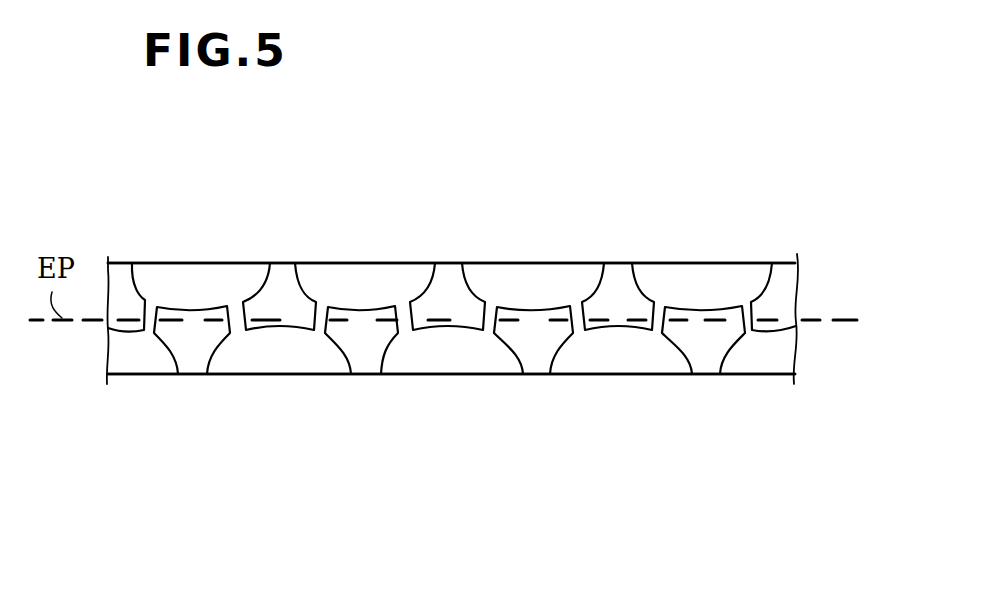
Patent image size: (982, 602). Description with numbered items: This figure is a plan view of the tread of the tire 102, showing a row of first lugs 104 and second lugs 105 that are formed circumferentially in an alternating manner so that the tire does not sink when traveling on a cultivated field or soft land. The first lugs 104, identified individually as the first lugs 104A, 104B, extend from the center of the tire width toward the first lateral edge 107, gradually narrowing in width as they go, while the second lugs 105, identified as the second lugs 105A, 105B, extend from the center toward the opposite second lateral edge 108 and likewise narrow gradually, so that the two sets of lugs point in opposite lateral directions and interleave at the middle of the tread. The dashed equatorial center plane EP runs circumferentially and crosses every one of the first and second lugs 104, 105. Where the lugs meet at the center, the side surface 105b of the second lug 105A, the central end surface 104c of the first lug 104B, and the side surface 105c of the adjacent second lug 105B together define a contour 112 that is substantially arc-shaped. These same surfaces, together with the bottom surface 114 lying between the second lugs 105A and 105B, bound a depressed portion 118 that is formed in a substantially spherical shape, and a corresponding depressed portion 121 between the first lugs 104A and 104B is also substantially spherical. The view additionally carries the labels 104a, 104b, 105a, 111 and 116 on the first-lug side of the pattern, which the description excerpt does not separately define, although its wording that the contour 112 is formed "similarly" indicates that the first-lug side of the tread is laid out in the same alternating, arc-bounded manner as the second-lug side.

The tire 102 is at (707, 263).
The first lugs 104 is at (621, 272).
The first lug 104A is at (284, 262).
The first lug 104B is at (458, 263).
The neck portion of first tooth 104a is at (298, 276).
The shoulder portion of first tooth 104b is at (429, 263).
The central end surface 104c is at (446, 330).
The second lugs 105 is at (192, 362).
The second lug 105A is at (362, 373).
The second lug 105B is at (543, 375).
The end face of second tooth 105a is at (370, 310).
The side surface 105b is at (395, 374).
The side surface 105c is at (513, 358).
The first lateral edge 107 is at (155, 263).
The second lateral edge 108 is at (137, 381).
The first gap 111 is at (418, 293).
The contour 112 is at (507, 342).
The bottom surface 114 is at (412, 360).
The clearance 116 is at (329, 277).
The depressed portion 118 is at (470, 347).
The depressed portion 121 is at (345, 290).